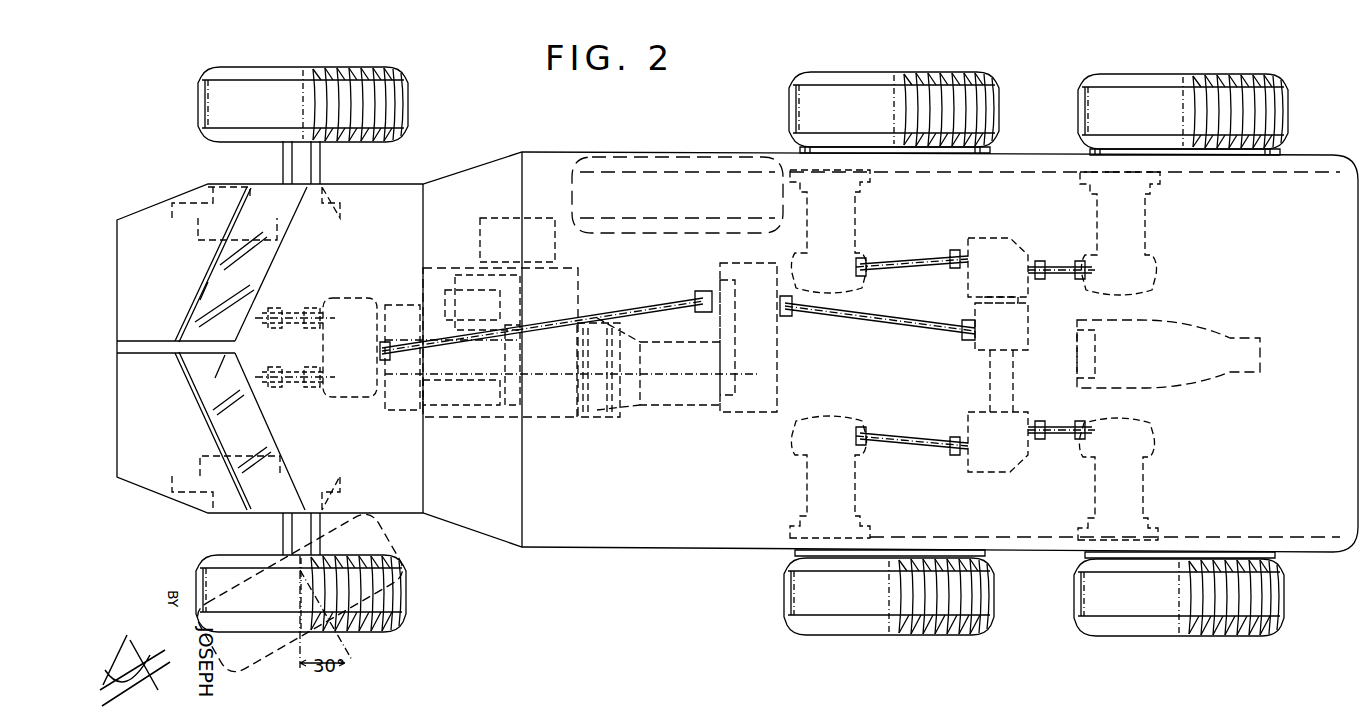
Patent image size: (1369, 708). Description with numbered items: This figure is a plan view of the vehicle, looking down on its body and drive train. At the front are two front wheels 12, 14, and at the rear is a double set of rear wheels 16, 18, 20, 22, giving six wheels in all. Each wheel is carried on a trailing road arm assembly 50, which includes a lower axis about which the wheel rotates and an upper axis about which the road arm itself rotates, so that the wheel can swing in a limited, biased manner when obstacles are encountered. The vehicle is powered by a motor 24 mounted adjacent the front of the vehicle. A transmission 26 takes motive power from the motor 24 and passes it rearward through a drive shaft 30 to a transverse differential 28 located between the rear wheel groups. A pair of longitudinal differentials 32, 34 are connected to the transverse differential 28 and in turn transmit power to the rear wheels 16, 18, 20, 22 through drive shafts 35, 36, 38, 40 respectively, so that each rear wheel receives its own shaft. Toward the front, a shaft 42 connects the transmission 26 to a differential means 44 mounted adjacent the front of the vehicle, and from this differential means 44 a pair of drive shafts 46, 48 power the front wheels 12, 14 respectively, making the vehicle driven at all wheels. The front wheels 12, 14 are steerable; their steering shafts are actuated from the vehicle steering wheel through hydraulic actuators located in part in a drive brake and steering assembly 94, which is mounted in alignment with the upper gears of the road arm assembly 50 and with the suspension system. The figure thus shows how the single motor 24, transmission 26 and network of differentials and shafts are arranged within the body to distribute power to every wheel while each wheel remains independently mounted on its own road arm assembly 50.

The front wheel 12 is at (408, 98).
The front wheel 14 is at (403, 604).
The rear wheel 16 is at (985, 102).
The rear wheel 18 is at (940, 640).
The rear wheel 20 is at (1283, 104).
The rear wheel 22 is at (1155, 640).
The motor 24 is at (450, 420).
The transmission 26 is at (622, 415).
The transverse differential 28 is at (975, 352).
The drive shaft 30 is at (852, 322).
The longitudinal differential 32 is at (985, 238).
The longitudinal differential 34 is at (993, 474).
The drive shaft 35 is at (898, 256).
The drive shaft 36 is at (893, 447).
The drive shaft 38 is at (1050, 264).
The drive shaft 40 is at (1055, 420).
The shaft 42 is at (640, 305).
The differential means 44 is at (343, 300).
The drive shaft 46 is at (298, 308).
The drive shaft 48 is at (297, 394).
The trailing road arm assembly 50 is at (215, 192).
The drive brake and steering assembly 94 is at (200, 310).